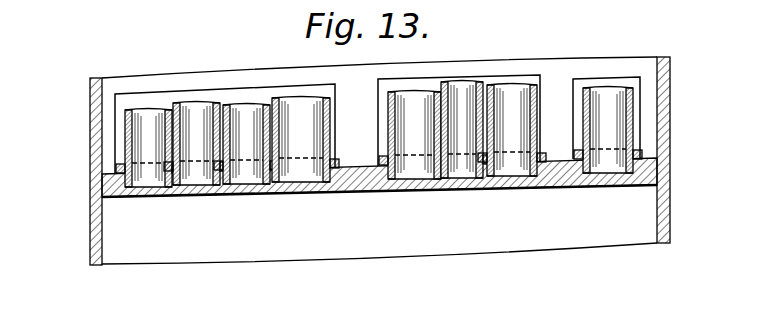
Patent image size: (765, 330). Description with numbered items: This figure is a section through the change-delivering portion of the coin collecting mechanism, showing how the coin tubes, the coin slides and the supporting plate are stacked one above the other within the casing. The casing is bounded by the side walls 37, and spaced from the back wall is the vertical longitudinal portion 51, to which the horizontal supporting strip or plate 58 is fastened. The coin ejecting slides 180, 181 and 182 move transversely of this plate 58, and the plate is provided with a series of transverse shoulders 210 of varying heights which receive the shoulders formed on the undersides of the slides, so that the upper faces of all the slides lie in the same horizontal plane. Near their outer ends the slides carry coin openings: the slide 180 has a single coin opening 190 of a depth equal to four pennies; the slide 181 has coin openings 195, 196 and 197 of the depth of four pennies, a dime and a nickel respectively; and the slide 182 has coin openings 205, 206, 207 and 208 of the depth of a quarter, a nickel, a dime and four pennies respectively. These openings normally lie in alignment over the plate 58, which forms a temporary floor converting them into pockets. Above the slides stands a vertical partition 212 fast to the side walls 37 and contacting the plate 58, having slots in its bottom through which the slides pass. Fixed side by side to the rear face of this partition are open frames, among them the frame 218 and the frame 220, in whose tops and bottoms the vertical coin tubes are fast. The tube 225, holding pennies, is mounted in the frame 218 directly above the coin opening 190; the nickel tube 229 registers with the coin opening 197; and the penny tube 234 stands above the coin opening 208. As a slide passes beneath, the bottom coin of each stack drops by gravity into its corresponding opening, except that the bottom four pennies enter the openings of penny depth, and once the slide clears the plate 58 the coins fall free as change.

The vertical longitudinal portion 51 is at (580, 242).
The side walls 37 is at (667, 150).
The horizontal supporting strip 58 is at (377, 190).
The vertical partition 212 is at (640, 69).
The open frame 220 is at (123, 106).
The open frame 218 is at (638, 103).
The coin tube 234 is at (138, 118).
The coin tube 229 is at (402, 103).
The coin tube 225 is at (602, 103).
The coin opening 208 is at (140, 200).
The coin opening 207 is at (198, 200).
The coin opening 206 is at (262, 200).
The coin opening 205 is at (298, 200).
The transverse shoulders 210 is at (180, 196).
The coin slide 182 is at (220, 196).
The coin opening 197 is at (405, 188).
The coin opening 196 is at (466, 170).
The coin opening 195 is at (498, 178).
The coin slide 181 is at (534, 172).
The coin opening 190 is at (602, 158).
The coin slide 180 is at (633, 168).